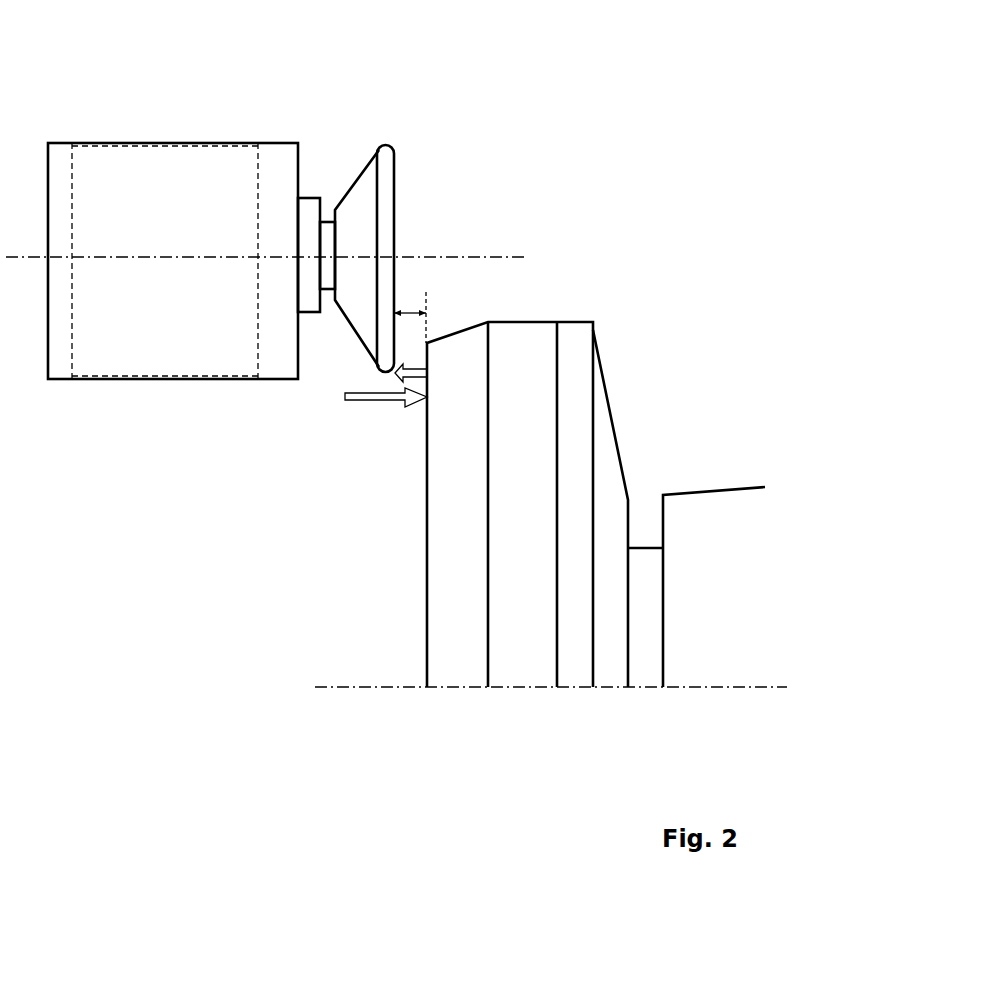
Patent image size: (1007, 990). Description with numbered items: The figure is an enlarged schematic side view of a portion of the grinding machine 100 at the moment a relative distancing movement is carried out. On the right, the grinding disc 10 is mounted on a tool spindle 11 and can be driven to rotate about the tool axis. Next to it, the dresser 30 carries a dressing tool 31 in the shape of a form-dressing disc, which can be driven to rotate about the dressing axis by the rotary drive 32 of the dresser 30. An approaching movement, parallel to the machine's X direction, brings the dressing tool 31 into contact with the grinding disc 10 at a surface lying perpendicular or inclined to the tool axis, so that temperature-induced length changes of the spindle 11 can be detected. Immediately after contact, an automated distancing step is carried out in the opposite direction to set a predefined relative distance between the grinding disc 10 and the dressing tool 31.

The grinding machine 100 is at (664, 63).
The dresser 30 is at (294, 82).
The dressing tool 31 is at (385, 146).
The rotary drive 32 is at (206, 184).
The grinding disc 10 is at (578, 296).
The tool spindle 11 is at (715, 510).